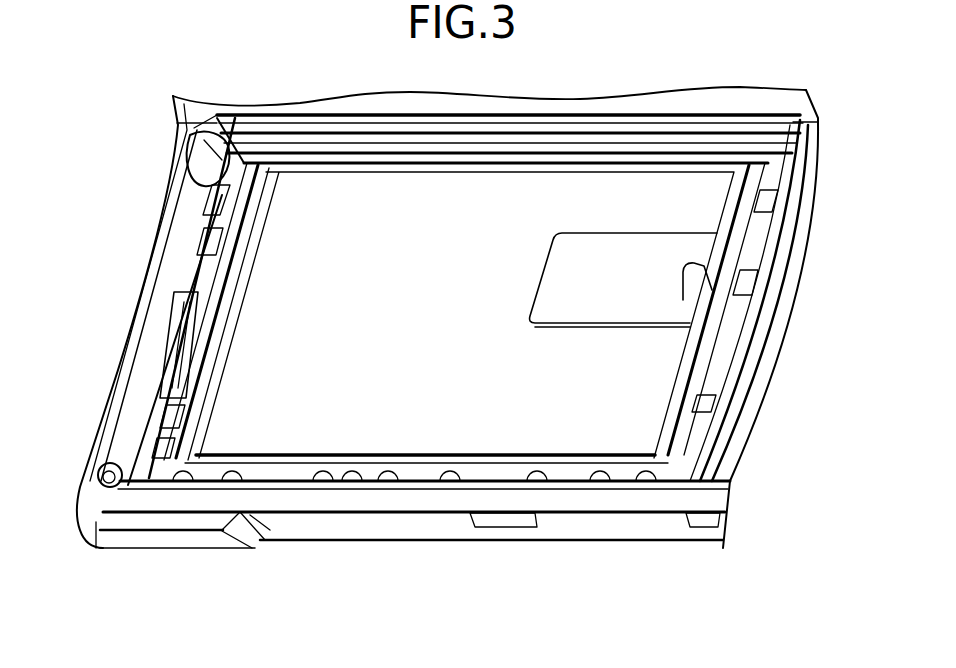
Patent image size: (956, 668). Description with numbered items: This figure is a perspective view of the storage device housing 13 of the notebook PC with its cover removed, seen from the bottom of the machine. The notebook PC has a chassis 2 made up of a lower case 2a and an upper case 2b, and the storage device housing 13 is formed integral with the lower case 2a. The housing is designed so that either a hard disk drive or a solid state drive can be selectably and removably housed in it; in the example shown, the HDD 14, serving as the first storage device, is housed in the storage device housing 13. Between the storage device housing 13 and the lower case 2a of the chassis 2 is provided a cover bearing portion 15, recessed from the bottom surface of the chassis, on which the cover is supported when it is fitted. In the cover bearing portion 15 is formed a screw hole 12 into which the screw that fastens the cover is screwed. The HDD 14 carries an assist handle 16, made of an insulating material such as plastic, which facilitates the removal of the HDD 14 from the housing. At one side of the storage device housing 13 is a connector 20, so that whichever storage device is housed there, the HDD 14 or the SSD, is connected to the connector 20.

The chassis 2 is at (158, 512).
The lower case 2a is at (208, 512).
The upper case 2b is at (250, 525).
The screw hole 12 is at (737, 292).
The storage device housing 13 is at (443, 470).
The HDD 14 is at (379, 393).
The cover bearing portion 15 is at (138, 410).
The assist handle 16 is at (560, 297).
The connector 20 is at (208, 285).